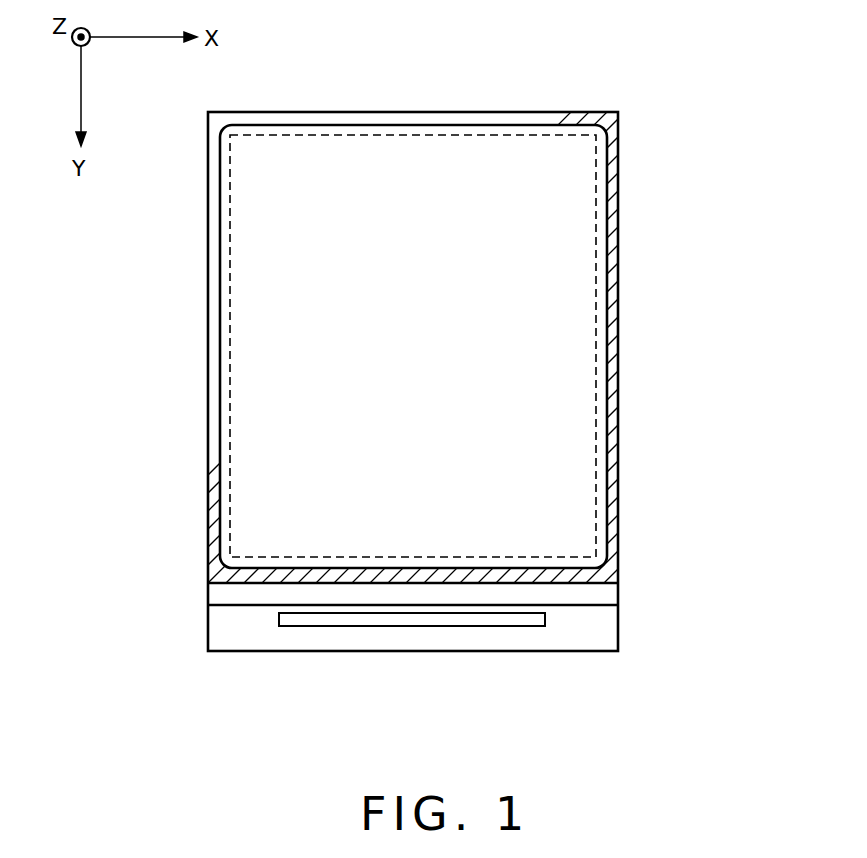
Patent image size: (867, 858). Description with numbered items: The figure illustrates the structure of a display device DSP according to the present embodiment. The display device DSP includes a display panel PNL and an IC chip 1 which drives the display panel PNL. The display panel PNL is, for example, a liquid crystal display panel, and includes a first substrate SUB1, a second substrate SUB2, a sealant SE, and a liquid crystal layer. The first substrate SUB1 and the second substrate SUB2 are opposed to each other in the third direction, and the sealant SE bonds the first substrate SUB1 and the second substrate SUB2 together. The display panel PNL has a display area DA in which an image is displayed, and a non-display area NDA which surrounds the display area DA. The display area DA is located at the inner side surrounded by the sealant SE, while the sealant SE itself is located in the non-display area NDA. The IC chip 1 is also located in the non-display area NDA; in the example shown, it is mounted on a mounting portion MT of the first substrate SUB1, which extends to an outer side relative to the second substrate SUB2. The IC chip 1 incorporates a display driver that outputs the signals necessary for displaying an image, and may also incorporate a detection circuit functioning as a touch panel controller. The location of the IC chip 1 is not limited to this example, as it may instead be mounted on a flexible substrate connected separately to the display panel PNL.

The display panel PNL is at (621, 633).
The sealant SE is at (619, 488).
The display area DA is at (228, 438).
The non-display area NDA is at (579, 563).
The second substrate SUB2 is at (225, 593).
The first substrate SUB1 is at (225, 630).
The IC chip 1 is at (360, 619).
The mounting portion MT is at (267, 627).
The display device DSP is at (685, 738).